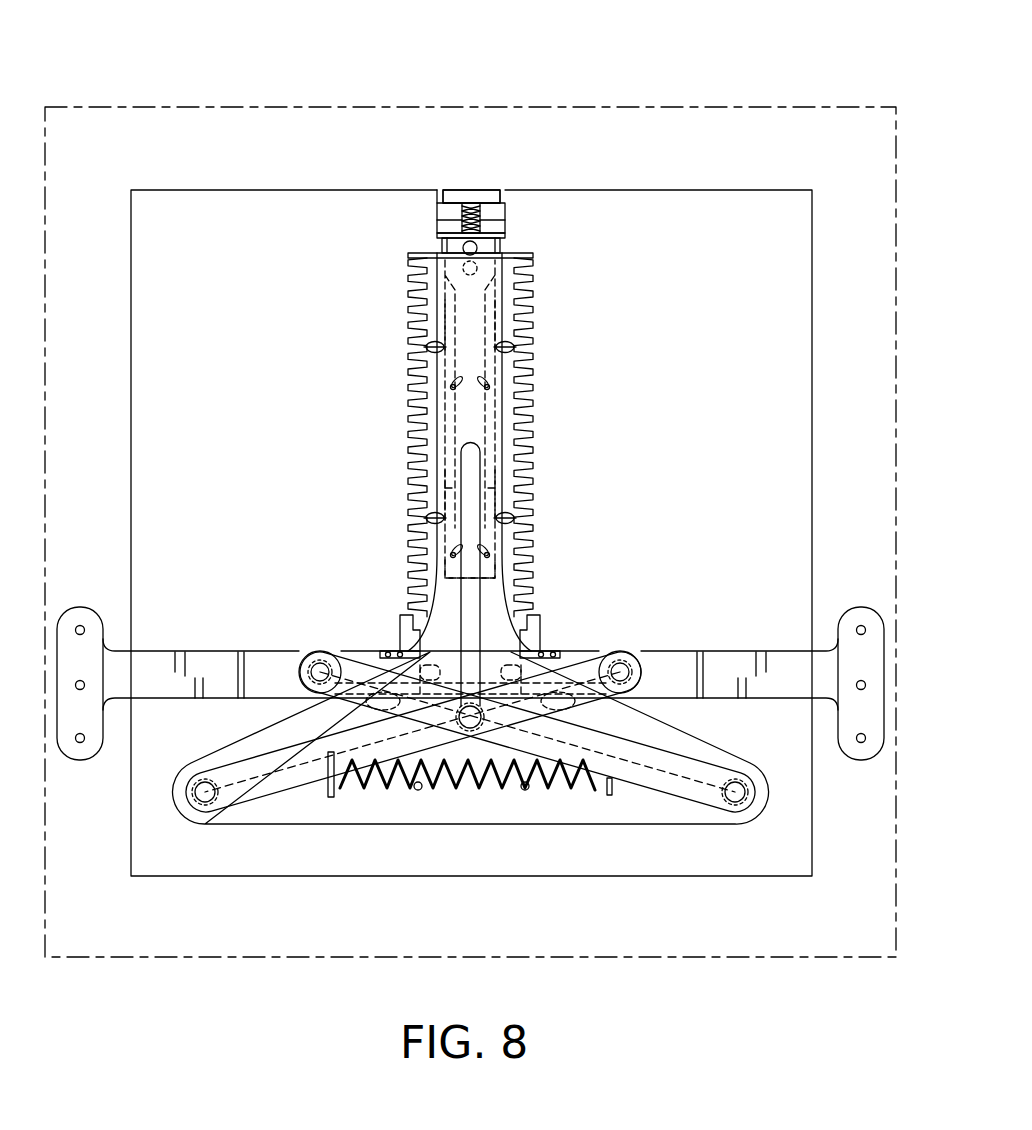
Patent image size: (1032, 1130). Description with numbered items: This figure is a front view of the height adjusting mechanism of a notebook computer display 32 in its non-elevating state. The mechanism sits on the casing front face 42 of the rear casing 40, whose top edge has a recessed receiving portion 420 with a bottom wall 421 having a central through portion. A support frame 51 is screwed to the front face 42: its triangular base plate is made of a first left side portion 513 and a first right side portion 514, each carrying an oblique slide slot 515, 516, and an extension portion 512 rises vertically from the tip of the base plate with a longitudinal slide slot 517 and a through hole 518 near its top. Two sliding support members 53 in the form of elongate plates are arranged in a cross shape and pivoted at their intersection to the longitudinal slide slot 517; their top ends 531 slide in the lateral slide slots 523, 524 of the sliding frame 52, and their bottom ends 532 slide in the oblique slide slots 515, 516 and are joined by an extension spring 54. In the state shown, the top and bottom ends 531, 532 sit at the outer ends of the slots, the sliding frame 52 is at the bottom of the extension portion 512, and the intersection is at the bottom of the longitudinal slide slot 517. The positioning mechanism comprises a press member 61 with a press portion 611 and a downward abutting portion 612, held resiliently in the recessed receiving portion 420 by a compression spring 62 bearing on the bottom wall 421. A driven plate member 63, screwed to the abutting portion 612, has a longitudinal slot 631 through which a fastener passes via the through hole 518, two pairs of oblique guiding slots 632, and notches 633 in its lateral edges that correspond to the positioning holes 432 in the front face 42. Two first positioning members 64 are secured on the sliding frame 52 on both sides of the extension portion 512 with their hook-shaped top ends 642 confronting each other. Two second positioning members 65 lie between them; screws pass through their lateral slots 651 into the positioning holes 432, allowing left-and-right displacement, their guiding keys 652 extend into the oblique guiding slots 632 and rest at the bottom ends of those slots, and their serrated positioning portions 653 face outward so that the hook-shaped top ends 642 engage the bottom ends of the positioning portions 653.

The display 32 is at (826, 134).
The rear casing 40 is at (826, 320).
The casing front face 42 is at (798, 426).
The recessed receiving portion 420 is at (439, 184).
The bottom wall 421 is at (493, 236).
The internally threaded positioning holes 432 is at (425, 347).
The support frame 51 is at (762, 758).
The extension portion 512 is at (440, 450).
The first left side portion 513 is at (307, 723).
The first right side portion 514 is at (630, 715).
The oblique slide slot 515 is at (327, 732).
The oblique slide slot 516 is at (617, 734).
The longitudinal slide slot 517 is at (476, 458).
The through hole 518 is at (482, 268).
The sliding frame 52 is at (198, 667).
The lateral slide slot 523 is at (324, 650).
The lateral slide slot 524 is at (632, 672).
The sliding support members 53 is at (285, 778).
The top end 531 is at (303, 670).
The bottom end 532 is at (755, 798).
The extension spring 54 is at (458, 782).
The press member 61 is at (478, 176).
The press portion 611 is at (492, 194).
The abutting portion 612 is at (462, 216).
The compression spring 62 is at (482, 213).
The driven plate member 63 is at (495, 418).
The longitudinal slot 631 is at (463, 247).
The oblique guiding slots 632 is at (452, 381).
The notches 633 is at (432, 322).
The first positioning members 64 is at (542, 643).
The hook-shaped top end 642 is at (404, 632).
The second positioning members 65 is at (427, 288).
The lateral slots 651 is at (426, 517).
The guiding keys 652 is at (445, 388).
The positioning portions 653 is at (440, 578).